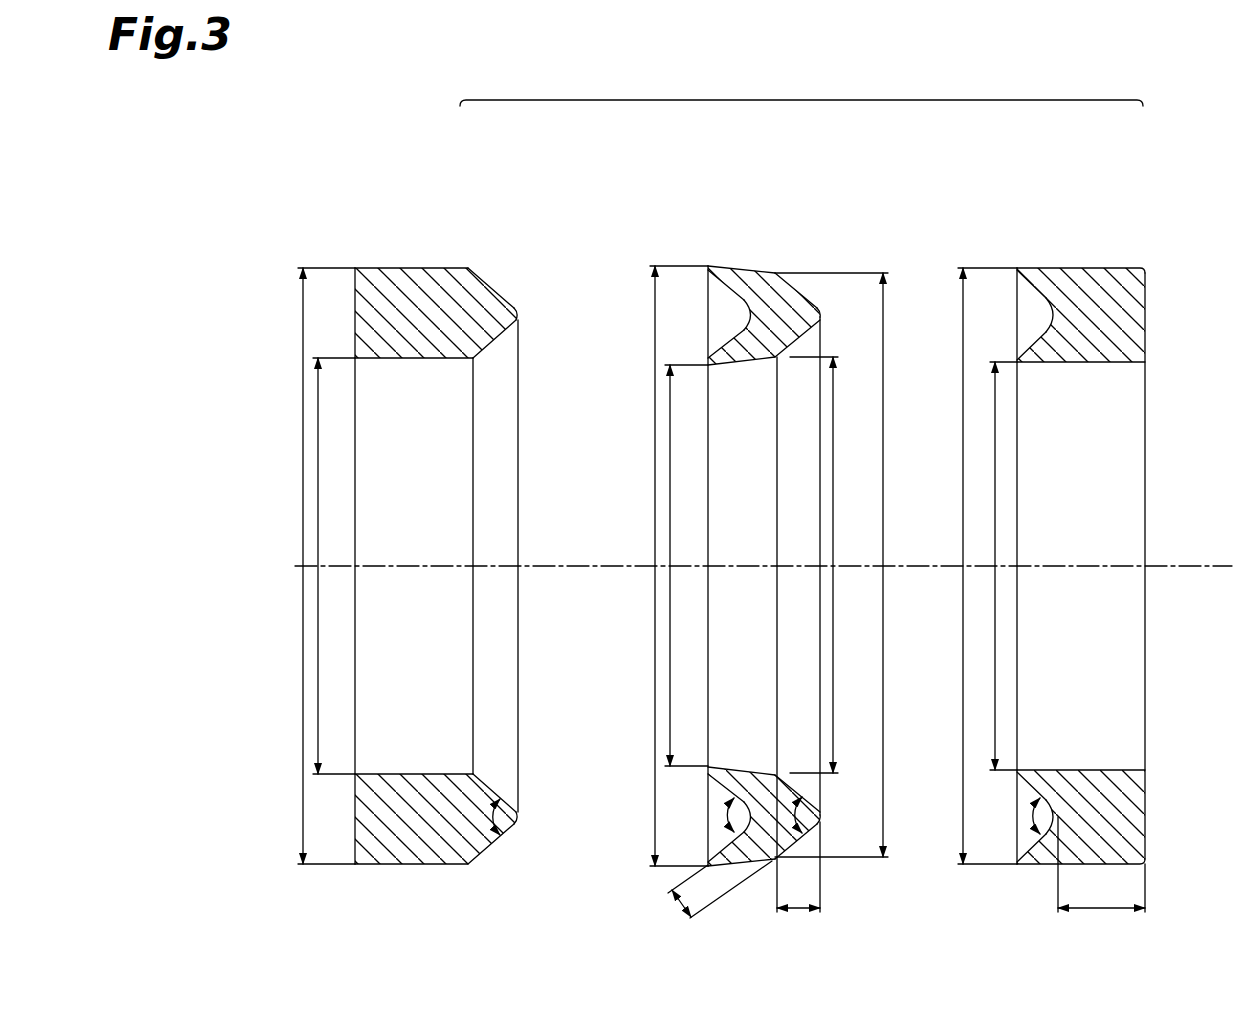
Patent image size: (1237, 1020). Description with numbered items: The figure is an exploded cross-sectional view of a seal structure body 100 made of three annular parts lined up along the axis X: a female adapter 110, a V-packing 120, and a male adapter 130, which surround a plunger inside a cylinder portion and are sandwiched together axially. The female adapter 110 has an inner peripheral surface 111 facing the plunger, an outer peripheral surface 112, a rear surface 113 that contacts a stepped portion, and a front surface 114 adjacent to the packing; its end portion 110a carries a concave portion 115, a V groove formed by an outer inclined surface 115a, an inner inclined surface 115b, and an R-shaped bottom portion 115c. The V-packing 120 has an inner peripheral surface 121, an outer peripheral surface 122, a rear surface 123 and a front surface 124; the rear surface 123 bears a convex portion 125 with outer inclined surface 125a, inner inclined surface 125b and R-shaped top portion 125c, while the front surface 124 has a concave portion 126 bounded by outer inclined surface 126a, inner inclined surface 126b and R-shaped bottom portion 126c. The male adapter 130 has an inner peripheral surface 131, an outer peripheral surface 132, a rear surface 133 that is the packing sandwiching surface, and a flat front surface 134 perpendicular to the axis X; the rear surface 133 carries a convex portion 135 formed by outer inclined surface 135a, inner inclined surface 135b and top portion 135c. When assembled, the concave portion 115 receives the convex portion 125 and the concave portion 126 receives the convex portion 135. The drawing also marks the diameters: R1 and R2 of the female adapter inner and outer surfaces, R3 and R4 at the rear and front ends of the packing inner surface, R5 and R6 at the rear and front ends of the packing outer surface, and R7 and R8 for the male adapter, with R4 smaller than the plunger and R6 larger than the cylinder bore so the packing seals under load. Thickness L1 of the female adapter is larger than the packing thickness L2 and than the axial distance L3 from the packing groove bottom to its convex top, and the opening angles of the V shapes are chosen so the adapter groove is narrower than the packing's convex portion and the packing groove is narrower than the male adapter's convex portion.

The seal structure body 100 is at (801, 86).
The female adapter 110 is at (1064, 525).
The end portion 110a is at (1018, 770).
The inner peripheral surface 111 is at (1100, 364).
The outer peripheral surface 112 is at (1100, 268).
The rear surface 113 is at (1147, 312).
The front surface 114 is at (1050, 511).
The concave portion 115 is at (1050, 511).
The outer inclined surface 115a is at (1040, 296).
The inner inclined surface 115b is at (1032, 345).
The bottom portion 115c is at (1052, 332).
The V-packing 120 is at (763, 525).
The inner peripheral surface 121 is at (745, 362).
The outer peripheral surface 122 is at (770, 272).
The rear surface 123 is at (833, 523).
The front surface 124 is at (673, 511).
The convex portion 125 is at (833, 523).
The outer inclined surface 125a is at (800, 292).
The inner inclined surface 125b is at (800, 345).
The top portion 125c is at (822, 312).
The concave portion 126 is at (673, 511).
The outer inclined surface 126a is at (705, 288).
The inner inclined surface 126b is at (722, 345).
The bottom portion 126c is at (750, 313).
The male adapter 130 is at (422, 510).
The inner peripheral surface 131 is at (410, 358).
The outer peripheral surface 132 is at (415, 268).
The rear surface 133 is at (514, 528).
The front surface 134 is at (355, 300).
The convex portion 135 is at (514, 528).
The outer inclined surface 135a is at (492, 286).
The inner inclined surface 135b is at (492, 342).
The top portion 135c is at (519, 314).
The diameter of inner peripheral surface of female adapter R1 is at (995, 507).
The diameter of outer peripheral surface of female adapter R2 is at (963, 517).
The diameter of rear end of inner peripheral surface of V-packing R3 is at (833, 627).
The diameter of front end of inner peripheral surface of V-packing R4 is at (670, 620).
The diameter of rear end of outer peripheral surface of V-packing R5 is at (883, 455).
The diameter of front end of outer peripheral surface of V-packing R6 is at (655, 518).
The diameter of inner peripheral surface of male adapter R7 is at (318, 620).
The diameter of outer peripheral surface of male adapter R8 is at (303, 518).
The thickness of female adapter L1 is at (1101, 879).
The thickness of V-packing L2 is at (710, 896).
The distance from bottom portion to top portion of V-packing L3 is at (796, 649).
The axis X is at (1195, 552).